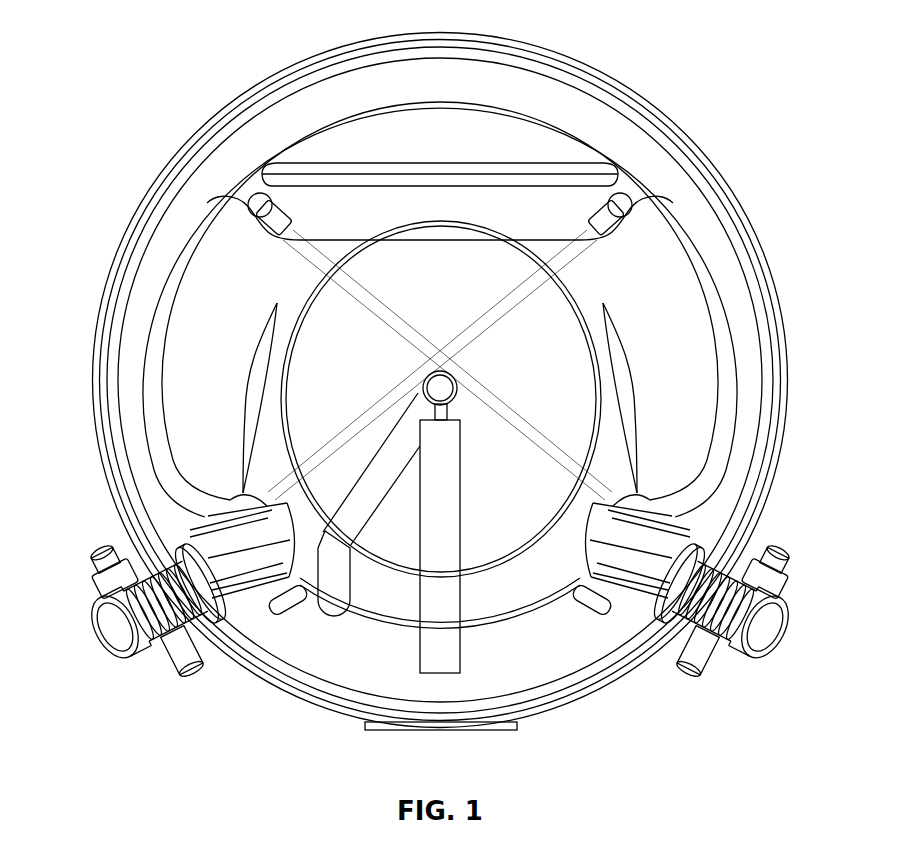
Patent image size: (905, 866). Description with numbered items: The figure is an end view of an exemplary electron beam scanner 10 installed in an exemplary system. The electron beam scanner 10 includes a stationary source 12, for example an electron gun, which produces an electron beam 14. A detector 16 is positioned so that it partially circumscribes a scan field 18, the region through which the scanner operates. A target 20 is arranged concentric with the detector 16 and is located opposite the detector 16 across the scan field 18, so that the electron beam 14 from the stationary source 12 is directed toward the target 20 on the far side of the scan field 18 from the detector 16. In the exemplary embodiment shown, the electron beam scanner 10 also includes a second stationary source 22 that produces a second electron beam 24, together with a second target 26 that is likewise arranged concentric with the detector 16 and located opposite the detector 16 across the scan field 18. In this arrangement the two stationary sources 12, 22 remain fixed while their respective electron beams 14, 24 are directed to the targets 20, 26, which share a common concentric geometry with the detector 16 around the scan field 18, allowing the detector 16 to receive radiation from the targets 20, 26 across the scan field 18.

The electron beam scanner 10 is at (699, 78).
The stationary source 12 is at (120, 640).
The electron beam 14 is at (247, 440).
The detector 16 is at (580, 293).
The scan field 18 is at (499, 381).
The target 20 is at (257, 328).
The second stationary source 22 is at (760, 640).
The second electron beam 24 is at (637, 468).
The second target 26 is at (635, 338).